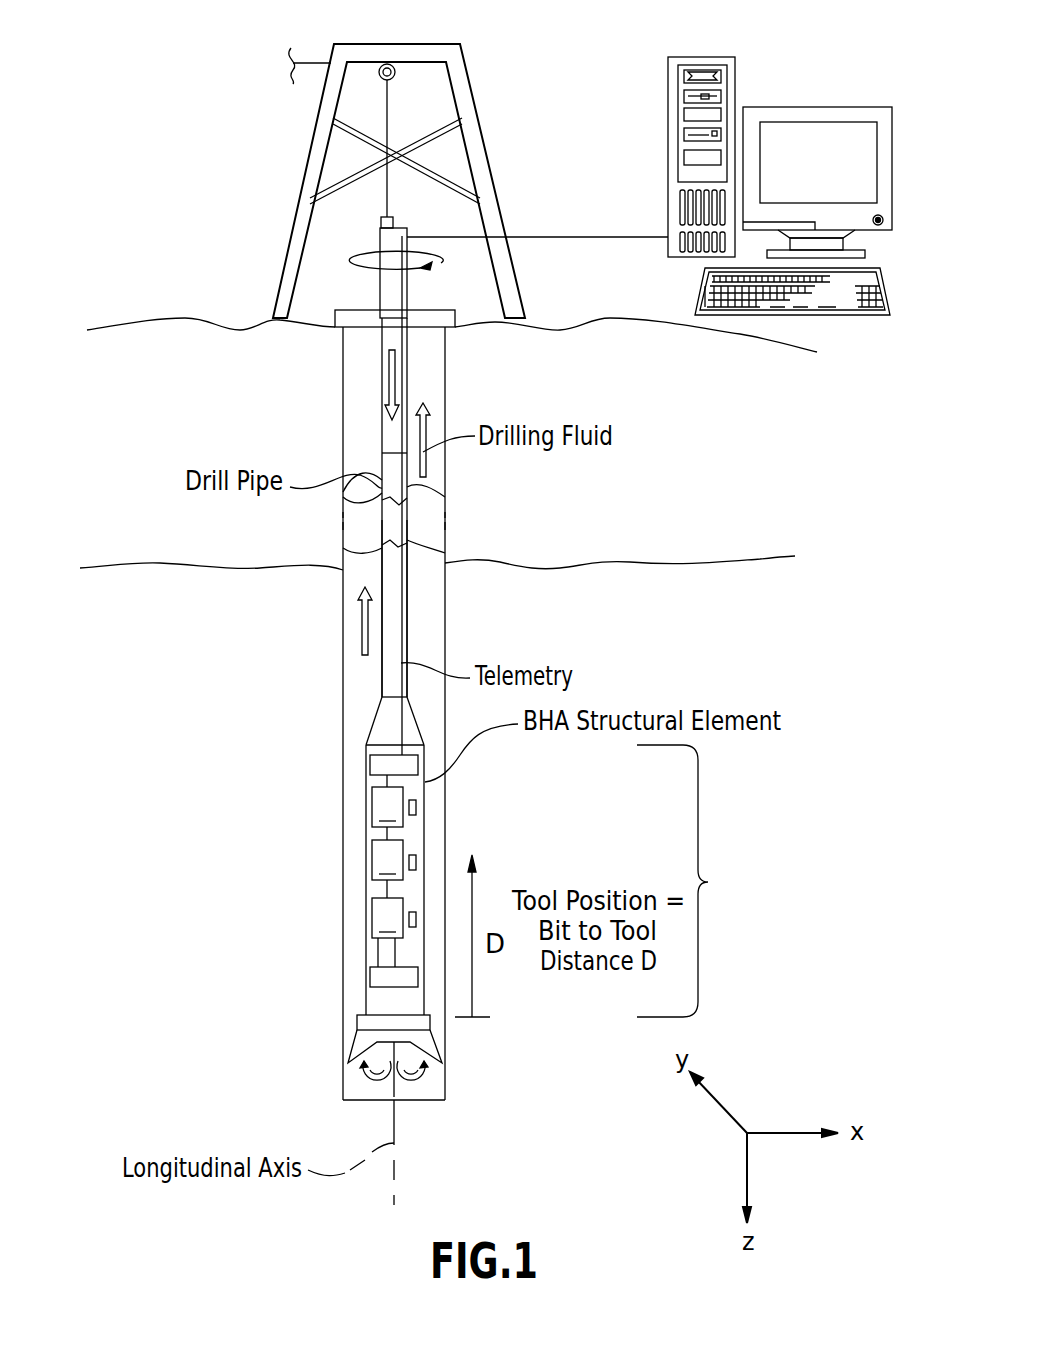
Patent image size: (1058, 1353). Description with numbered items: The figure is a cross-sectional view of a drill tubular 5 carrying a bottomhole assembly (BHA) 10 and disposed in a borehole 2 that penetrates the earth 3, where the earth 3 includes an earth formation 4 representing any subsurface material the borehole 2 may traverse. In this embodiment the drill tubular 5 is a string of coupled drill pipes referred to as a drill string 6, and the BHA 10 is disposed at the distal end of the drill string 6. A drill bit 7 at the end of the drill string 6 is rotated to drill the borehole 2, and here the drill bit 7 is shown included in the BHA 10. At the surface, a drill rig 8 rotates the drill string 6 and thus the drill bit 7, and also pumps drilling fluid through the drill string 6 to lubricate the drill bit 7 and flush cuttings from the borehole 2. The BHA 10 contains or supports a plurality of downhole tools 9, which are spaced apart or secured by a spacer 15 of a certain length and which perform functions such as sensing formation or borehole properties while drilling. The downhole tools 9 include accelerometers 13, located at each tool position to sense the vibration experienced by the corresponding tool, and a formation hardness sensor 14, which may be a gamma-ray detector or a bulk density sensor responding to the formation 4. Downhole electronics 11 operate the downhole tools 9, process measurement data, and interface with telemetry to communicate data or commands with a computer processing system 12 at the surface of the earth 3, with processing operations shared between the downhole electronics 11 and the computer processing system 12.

The borehole 2 is at (352, 456).
The earth 3 is at (147, 386).
The earth formation 4 is at (268, 638).
The drill tubular 5 is at (382, 552).
The drill string 6 is at (382, 432).
The drill bit 7 is at (358, 1040).
The drill rig 8 is at (215, 200).
The downhole tools 9 is at (772, 881).
The bottomhole assembly (BHA) 10 is at (375, 737).
The downhole electronics 11 is at (383, 765).
The computer processing system 12 is at (705, 57).
The accelerometers 13 is at (417, 915).
The formation hardness sensor 14 is at (383, 978).
The spacer 15 is at (402, 950).